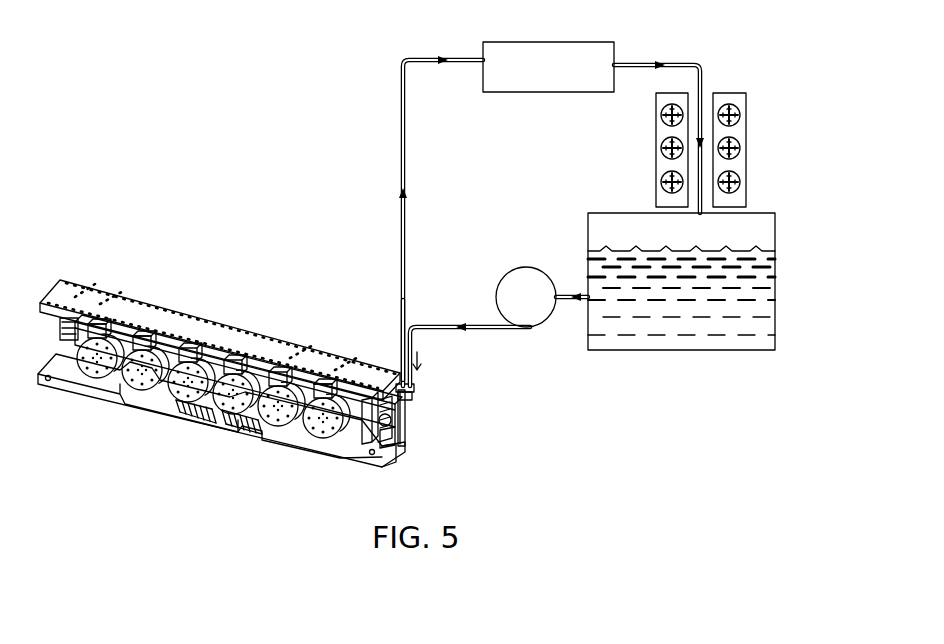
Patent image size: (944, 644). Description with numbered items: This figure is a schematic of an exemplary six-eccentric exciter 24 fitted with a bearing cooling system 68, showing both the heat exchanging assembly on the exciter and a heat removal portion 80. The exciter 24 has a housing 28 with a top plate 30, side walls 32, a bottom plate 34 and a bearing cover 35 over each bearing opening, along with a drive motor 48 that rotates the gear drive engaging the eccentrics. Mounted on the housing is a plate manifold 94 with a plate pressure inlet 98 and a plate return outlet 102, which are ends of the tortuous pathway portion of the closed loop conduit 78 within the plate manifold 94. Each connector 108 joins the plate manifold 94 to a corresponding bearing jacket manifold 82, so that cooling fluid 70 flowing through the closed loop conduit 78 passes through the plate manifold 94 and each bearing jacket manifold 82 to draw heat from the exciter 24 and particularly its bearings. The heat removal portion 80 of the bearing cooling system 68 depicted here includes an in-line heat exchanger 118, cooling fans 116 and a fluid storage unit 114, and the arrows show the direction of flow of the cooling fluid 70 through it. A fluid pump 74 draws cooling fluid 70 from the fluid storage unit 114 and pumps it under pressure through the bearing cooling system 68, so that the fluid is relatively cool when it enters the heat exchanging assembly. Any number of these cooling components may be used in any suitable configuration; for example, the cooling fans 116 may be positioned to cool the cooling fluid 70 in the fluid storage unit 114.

The exciter 24 is at (252, 450).
The housing 28 is at (407, 427).
The top plate 30 is at (76, 300).
The side walls 32 is at (163, 387).
The bottom plate 34 is at (393, 452).
The bearing cover 35 is at (125, 388).
The drive motor 48 is at (367, 418).
The bearing cooling system 68 is at (390, 290).
The cooling fluid 70 is at (650, 300).
The fluid pump 74 is at (527, 290).
The closed loop conduit 78 is at (400, 130).
The heat removal portion 80 is at (716, 60).
The bearing jacket manifold 82 is at (187, 404).
The plate manifold 94 is at (167, 347).
The plate pressure inlet 98 is at (411, 400).
The plate return outlet 102 is at (414, 383).
The connector 108 is at (146, 343).
The fluid storage unit 114 is at (614, 358).
The cooling fans 116 is at (670, 165).
The in-line heat exchanger 118 is at (555, 60).